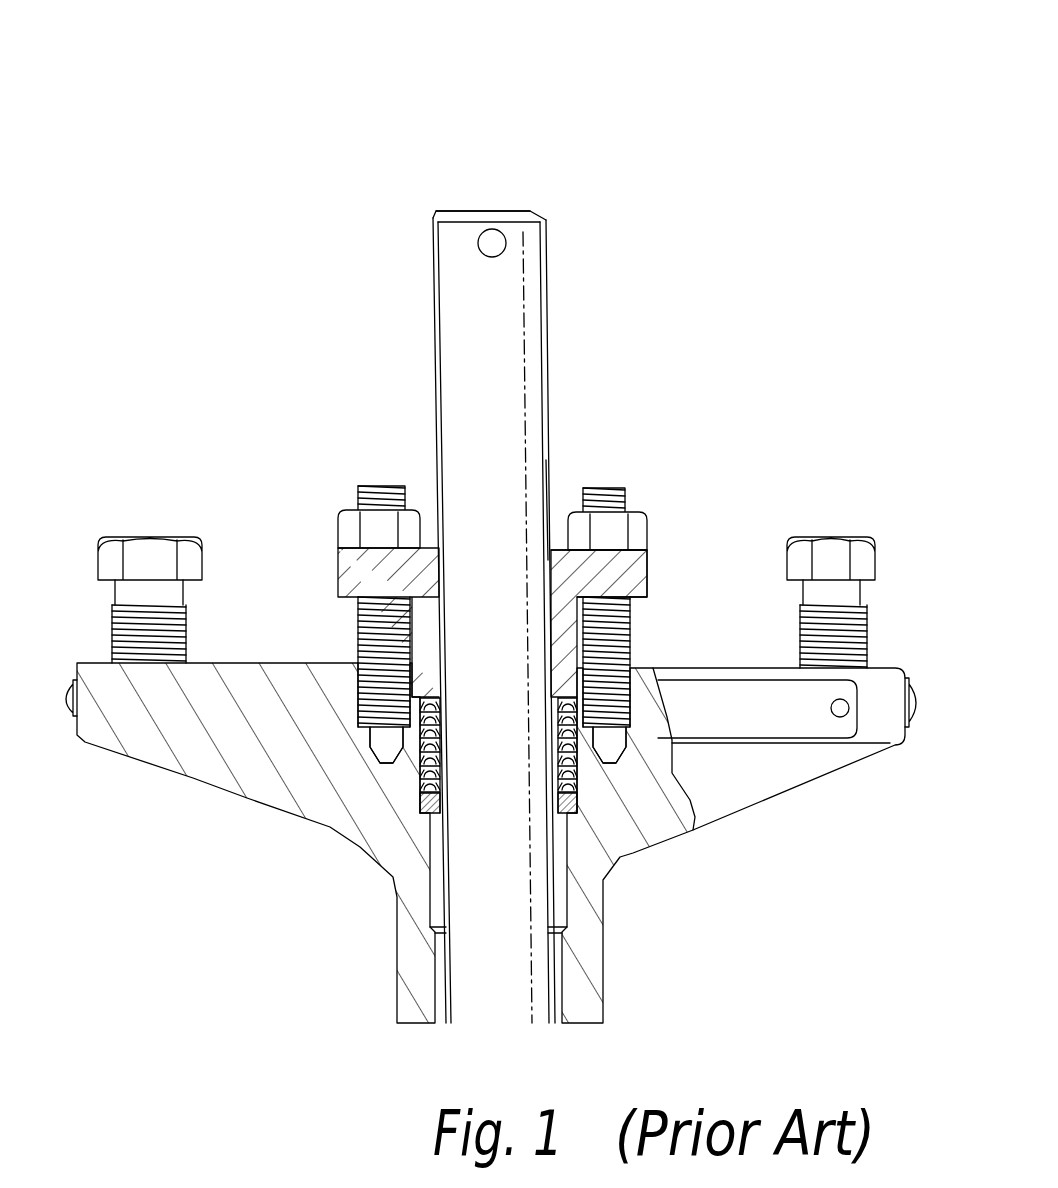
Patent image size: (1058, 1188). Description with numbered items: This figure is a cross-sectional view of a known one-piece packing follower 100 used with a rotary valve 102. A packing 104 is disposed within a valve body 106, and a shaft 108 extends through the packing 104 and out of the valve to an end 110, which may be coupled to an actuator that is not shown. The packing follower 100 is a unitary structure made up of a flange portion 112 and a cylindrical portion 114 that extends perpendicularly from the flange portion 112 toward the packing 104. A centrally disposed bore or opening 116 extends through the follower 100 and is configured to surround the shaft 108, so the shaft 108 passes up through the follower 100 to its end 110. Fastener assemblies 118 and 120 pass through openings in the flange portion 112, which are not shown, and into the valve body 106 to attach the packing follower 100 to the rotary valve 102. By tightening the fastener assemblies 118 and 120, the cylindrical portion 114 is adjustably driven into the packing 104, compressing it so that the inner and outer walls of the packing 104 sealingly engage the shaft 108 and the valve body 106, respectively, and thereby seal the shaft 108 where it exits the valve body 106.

The packing follower 100 is at (637, 578).
The rotary valve 102 is at (526, 114).
The packing 104 is at (417, 763).
The valve body 106 is at (670, 837).
The shaft 108 is at (528, 312).
The end 110 is at (527, 210).
The flange portion 112 is at (646, 550).
The cylindrical portion 114 is at (566, 693).
The bore or opening 116 is at (553, 548).
The fastener assembly 118 is at (607, 530).
The fastener assembly 120 is at (377, 527).